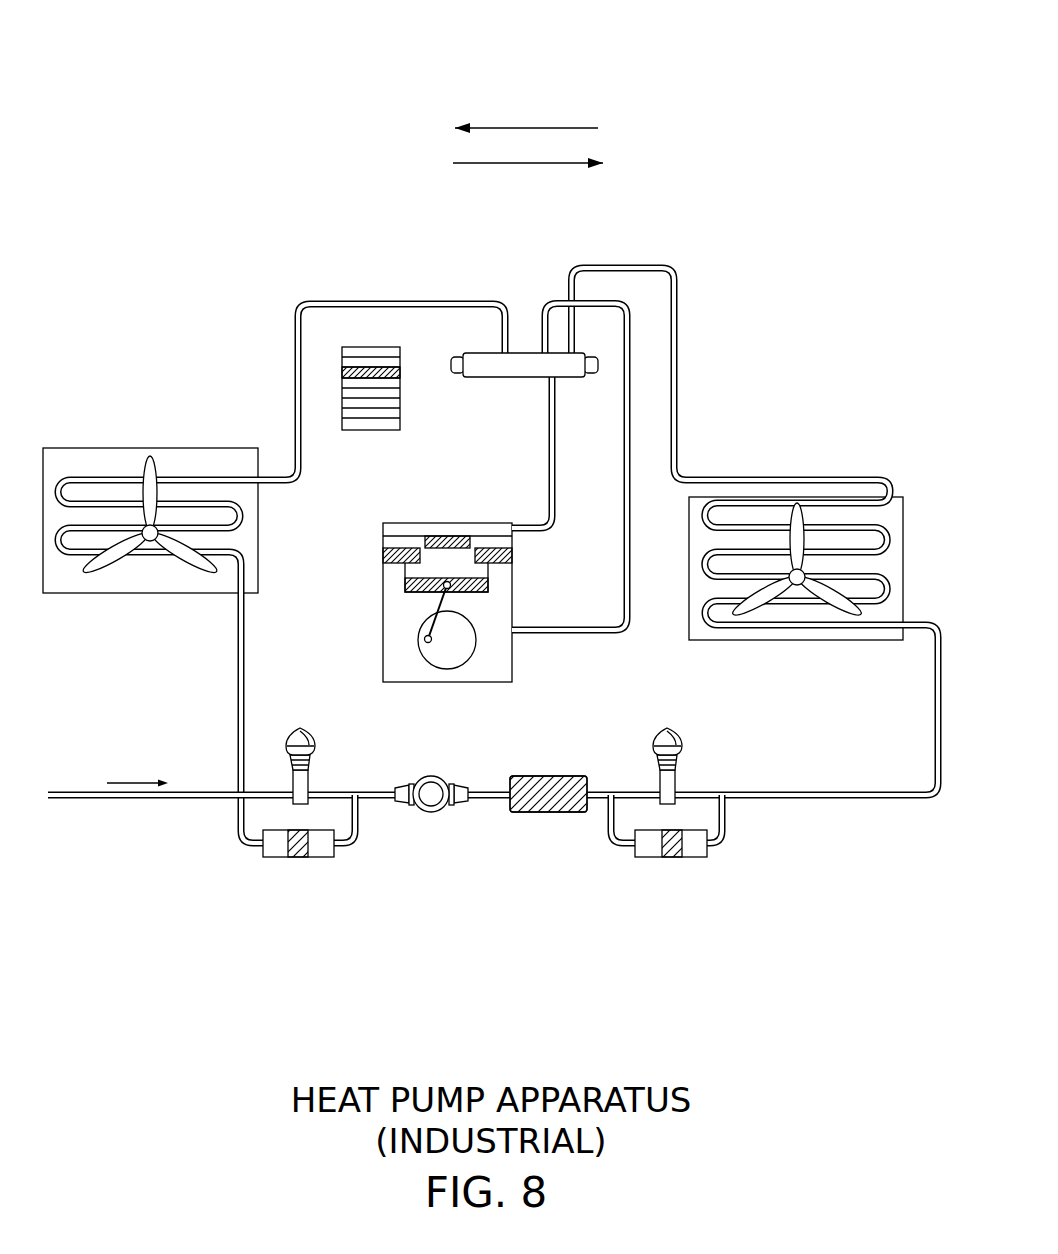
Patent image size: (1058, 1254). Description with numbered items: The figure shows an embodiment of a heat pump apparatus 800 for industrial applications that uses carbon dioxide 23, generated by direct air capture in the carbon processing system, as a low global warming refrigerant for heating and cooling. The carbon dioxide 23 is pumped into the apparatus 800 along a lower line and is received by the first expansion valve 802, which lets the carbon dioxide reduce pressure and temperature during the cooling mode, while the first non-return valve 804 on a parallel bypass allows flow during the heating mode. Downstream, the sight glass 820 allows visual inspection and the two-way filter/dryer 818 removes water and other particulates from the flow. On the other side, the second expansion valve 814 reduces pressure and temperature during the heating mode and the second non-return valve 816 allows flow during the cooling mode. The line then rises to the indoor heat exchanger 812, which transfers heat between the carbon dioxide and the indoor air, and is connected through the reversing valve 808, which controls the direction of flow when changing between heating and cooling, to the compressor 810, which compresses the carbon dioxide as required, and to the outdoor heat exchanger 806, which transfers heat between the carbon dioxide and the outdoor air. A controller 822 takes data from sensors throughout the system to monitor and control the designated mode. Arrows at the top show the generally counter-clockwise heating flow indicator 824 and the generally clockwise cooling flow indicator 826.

The heat pump apparatus 800 is at (177, 70).
The first expansion valve 802 is at (308, 781).
The first non-return valve 804 is at (302, 857).
The outdoor heat exchanger 806 is at (148, 452).
The reversing valve 808 is at (527, 352).
The compressor 810 is at (383, 583).
The indoor heat exchanger 812 is at (898, 497).
The second expansion valve 814 is at (676, 780).
The second non-return valve 816 is at (679, 857).
The two-way filter/dryer 818 is at (563, 812).
The sight glass 820 is at (432, 812).
The controller 822 is at (400, 392).
The heating flow indicator 824 is at (530, 128).
The cooling flow indicator 826 is at (525, 163).
The carbon dioxide 23 is at (65, 792).